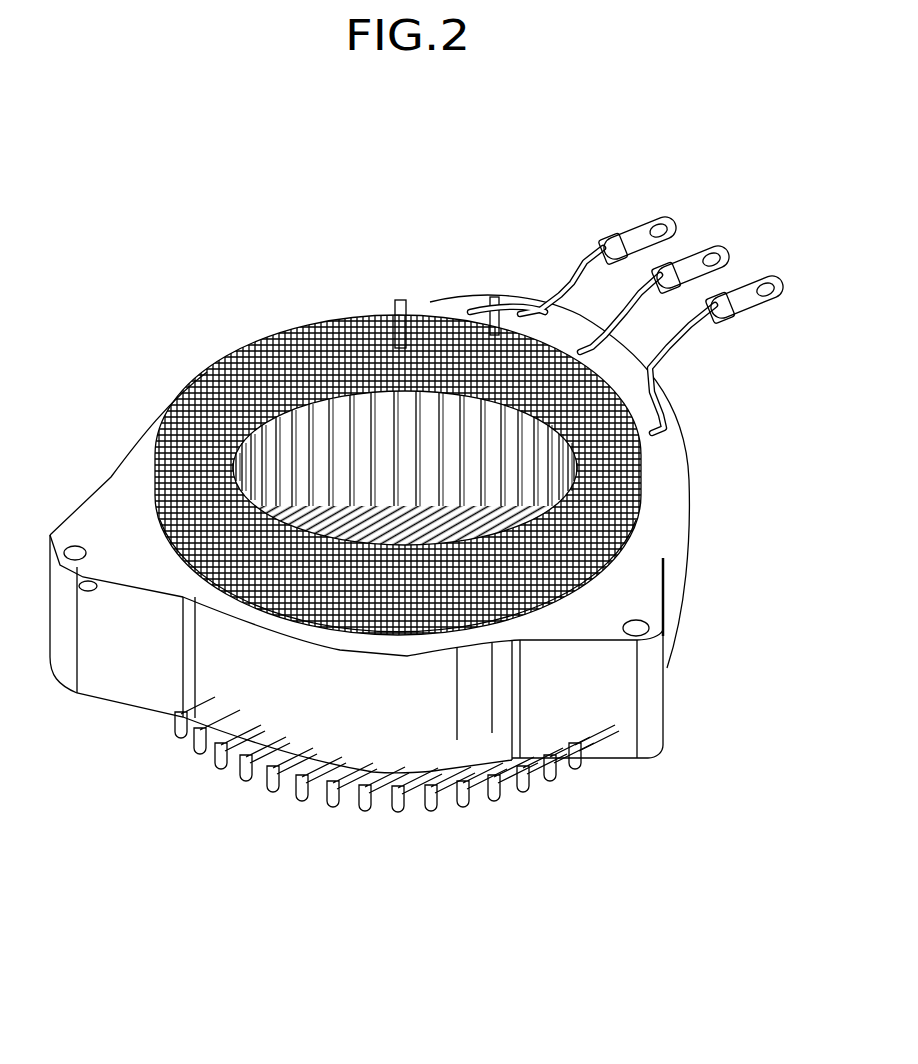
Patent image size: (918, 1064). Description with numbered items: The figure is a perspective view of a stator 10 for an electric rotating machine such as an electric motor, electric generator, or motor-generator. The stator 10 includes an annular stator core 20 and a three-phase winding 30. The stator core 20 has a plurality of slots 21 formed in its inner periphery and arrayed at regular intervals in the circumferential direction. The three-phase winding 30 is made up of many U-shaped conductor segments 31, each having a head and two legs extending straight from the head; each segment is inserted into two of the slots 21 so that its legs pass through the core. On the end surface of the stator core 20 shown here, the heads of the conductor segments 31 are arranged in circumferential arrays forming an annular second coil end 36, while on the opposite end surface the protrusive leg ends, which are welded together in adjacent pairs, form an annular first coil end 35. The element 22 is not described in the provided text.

The stator 10 is at (207, 265).
The stator core 20 is at (619, 765).
The slots 21 is at (277, 463).
The mounting flange of housing 22 is at (130, 508).
The three-phase winding 30 is at (652, 478).
The conductor segments 31 is at (258, 596).
The first coil end 35 is at (377, 773).
The second coil end 36 is at (633, 536).